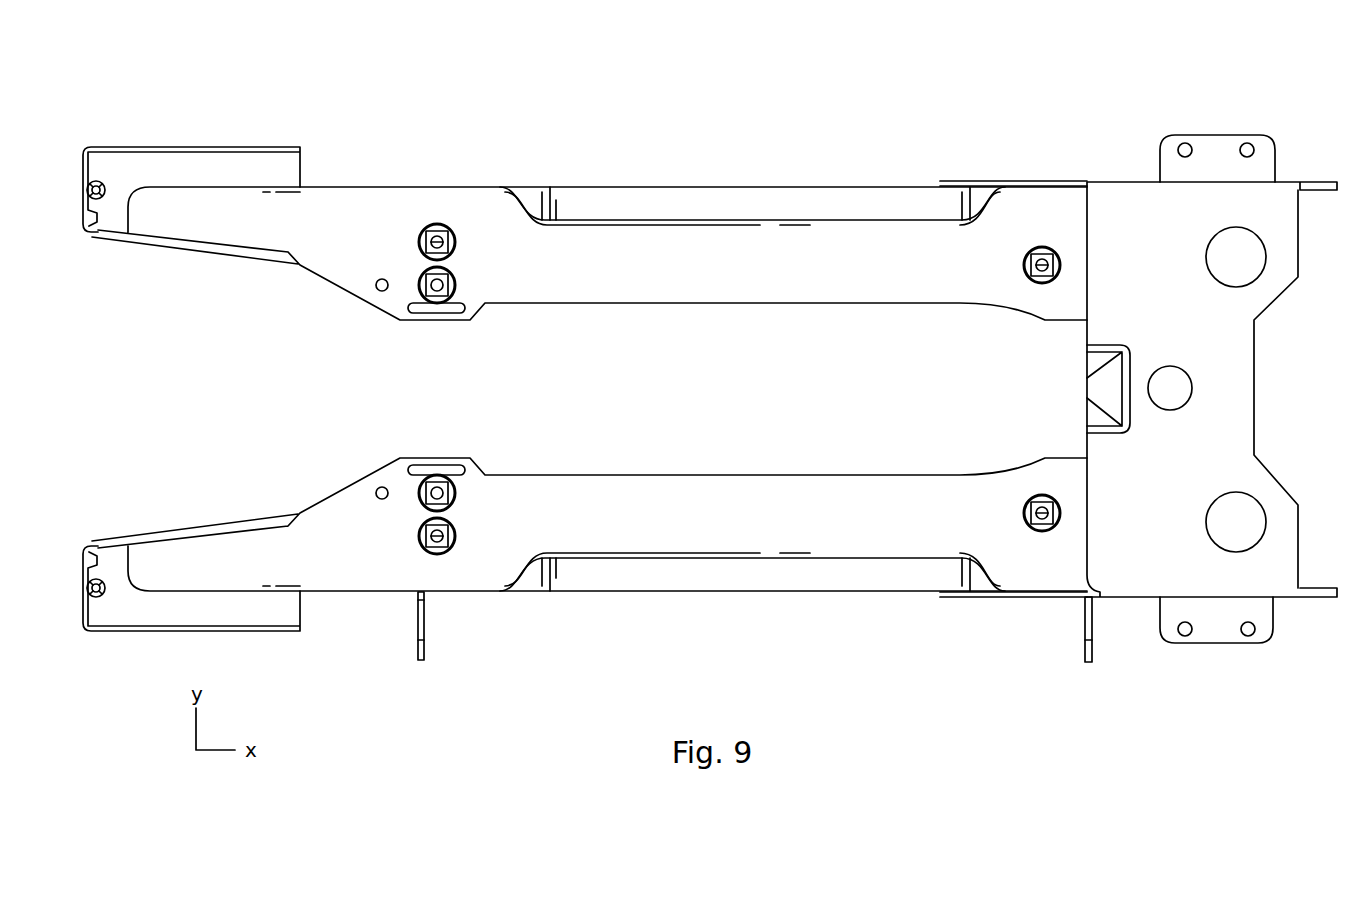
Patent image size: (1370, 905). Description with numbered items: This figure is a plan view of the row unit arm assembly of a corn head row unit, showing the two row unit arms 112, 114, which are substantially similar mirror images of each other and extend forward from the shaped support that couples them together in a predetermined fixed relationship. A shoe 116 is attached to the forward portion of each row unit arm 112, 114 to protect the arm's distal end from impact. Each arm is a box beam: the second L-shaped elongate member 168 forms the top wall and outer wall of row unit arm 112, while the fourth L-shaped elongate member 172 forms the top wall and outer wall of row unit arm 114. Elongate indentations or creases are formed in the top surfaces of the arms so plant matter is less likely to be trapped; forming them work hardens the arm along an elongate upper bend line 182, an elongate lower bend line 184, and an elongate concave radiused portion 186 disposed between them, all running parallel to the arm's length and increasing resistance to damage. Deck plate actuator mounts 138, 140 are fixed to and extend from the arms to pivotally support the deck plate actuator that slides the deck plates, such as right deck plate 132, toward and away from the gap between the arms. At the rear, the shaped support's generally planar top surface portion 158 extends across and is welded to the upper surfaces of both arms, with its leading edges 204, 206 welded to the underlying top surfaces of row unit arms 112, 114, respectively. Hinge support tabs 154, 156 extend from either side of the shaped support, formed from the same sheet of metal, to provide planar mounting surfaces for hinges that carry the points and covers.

The row unit arm 112 is at (485, 545).
The row unit arm 114 is at (476, 222).
The shoe 116 is at (193, 165).
The right deck plate 132 is at (1138, 389).
The deck plate actuator mount 138 is at (424, 652).
The deck plate actuator mount 140 is at (1087, 650).
The hinge support tab 154 is at (1172, 638).
The hinge support tab 156 is at (1168, 148).
The planar top surface portion 158 is at (1223, 405).
The second L-shaped elongate member 168 is at (349, 550).
The fourth L-shaped elongate member 172 is at (395, 217).
The elongate upper bend line 182 is at (697, 218).
The elongate lower bend line 184 is at (612, 186).
The elongate concave radiused portion 186 is at (767, 203).
The leading edge 204 is at (1087, 480).
The leading edge 206 is at (1087, 290).